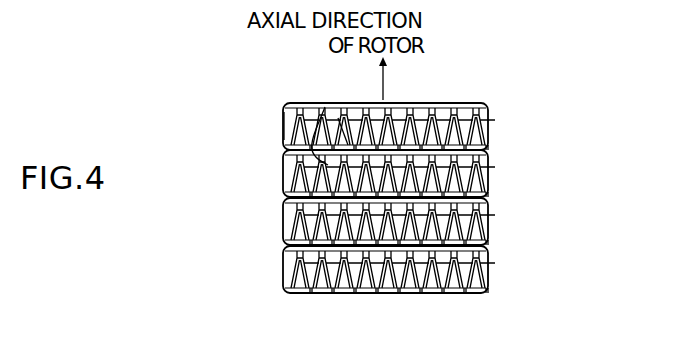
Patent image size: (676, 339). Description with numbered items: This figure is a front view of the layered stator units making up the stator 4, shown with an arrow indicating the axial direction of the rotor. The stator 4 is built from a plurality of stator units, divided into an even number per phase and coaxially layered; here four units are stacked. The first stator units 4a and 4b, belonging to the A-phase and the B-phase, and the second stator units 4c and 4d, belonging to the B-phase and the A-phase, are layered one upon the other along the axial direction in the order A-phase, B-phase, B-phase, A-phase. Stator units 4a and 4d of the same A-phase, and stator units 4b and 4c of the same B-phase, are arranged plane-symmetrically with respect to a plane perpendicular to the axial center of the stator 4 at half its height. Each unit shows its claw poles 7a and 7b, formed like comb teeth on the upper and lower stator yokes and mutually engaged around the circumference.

The stator 4 is at (442, 91).
The first stator unit 4a is at (488, 137).
The first stator unit 4b is at (489, 186).
The second stator unit 4c is at (489, 230).
The second stator unit 4d is at (489, 269).
The claw pole 7a is at (342, 123).
The claw pole 7b is at (283, 116).